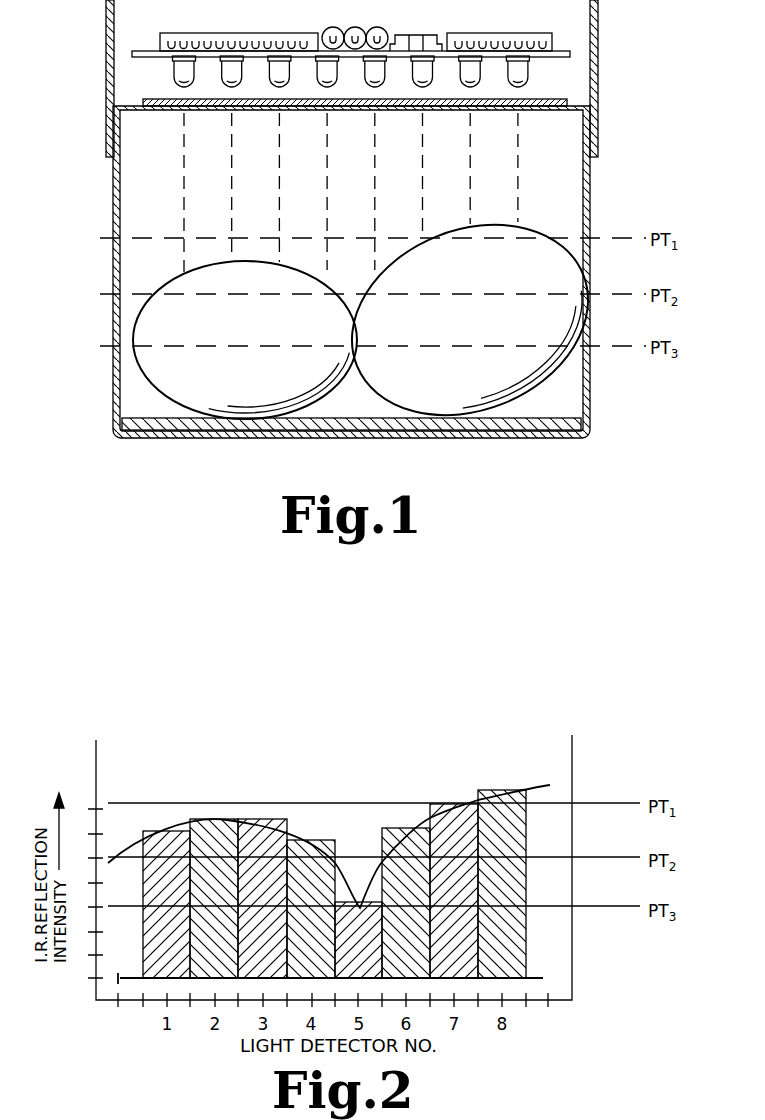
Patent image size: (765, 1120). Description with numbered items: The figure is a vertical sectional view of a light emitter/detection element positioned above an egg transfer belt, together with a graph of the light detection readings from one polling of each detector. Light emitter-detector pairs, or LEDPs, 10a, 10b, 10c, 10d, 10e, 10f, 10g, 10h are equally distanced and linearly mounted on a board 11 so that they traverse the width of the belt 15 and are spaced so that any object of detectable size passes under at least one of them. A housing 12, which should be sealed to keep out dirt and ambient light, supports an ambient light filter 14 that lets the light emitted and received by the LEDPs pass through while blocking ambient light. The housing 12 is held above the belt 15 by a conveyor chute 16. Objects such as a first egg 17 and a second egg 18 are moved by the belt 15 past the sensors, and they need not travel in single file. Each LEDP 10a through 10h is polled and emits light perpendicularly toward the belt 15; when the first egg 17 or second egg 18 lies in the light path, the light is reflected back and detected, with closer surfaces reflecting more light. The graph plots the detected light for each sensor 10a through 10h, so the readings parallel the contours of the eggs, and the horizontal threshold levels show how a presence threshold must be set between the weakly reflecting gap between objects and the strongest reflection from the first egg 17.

The light emitter-detector pair 10a is at (183, 84).
The light emitter-detector pair 10b is at (232, 87).
The light emitter-detector pair 10c is at (279, 87).
The light emitter-detector pair 10d is at (327, 87).
The light emitter-detector pair 10e is at (375, 87).
The light emitter-detector pair 10f is at (422, 87).
The light emitter-detector pair 10g is at (470, 87).
The light emitter-detector pair 10h is at (518, 87).
The board 11 is at (569, 47).
The housing 12 is at (598, 20).
The ambient light filter 14 is at (558, 100).
The belt 15 is at (564, 418).
The conveyor chute 16 is at (590, 402).
The first egg 17 is at (167, 387).
The second egg 18 is at (390, 388).